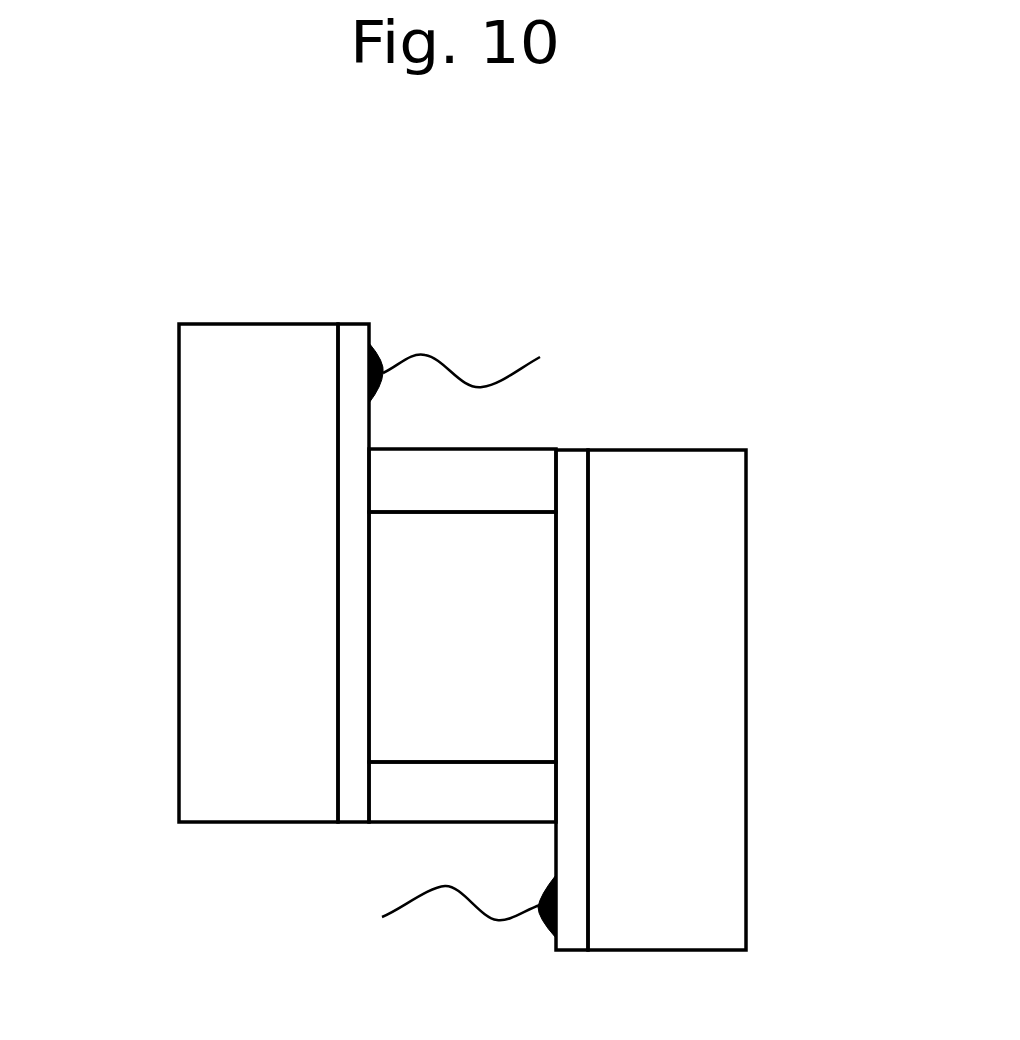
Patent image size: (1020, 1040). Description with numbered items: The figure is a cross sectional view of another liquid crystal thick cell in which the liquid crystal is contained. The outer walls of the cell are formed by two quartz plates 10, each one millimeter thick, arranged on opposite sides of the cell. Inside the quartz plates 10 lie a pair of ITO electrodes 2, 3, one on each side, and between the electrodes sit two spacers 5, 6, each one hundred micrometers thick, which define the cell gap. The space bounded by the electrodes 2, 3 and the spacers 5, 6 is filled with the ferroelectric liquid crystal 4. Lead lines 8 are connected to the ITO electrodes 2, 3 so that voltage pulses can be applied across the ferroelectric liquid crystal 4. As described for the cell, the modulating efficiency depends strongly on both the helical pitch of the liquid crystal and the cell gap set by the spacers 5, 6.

The ITO electrode 2 is at (353, 340).
The ITO electrode 3 is at (570, 932).
The ferroelectric liquid crystal 4 is at (493, 590).
The spacer 5 is at (492, 480).
The spacer 6 is at (430, 791).
The lead lines 8 is at (507, 367).
The quartz plates 10 is at (227, 542).